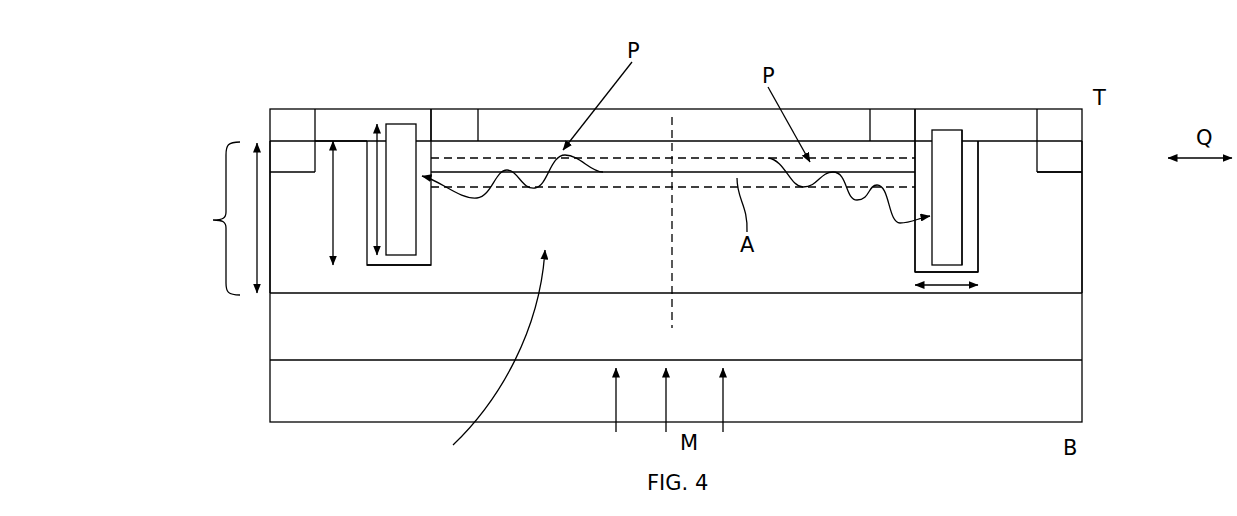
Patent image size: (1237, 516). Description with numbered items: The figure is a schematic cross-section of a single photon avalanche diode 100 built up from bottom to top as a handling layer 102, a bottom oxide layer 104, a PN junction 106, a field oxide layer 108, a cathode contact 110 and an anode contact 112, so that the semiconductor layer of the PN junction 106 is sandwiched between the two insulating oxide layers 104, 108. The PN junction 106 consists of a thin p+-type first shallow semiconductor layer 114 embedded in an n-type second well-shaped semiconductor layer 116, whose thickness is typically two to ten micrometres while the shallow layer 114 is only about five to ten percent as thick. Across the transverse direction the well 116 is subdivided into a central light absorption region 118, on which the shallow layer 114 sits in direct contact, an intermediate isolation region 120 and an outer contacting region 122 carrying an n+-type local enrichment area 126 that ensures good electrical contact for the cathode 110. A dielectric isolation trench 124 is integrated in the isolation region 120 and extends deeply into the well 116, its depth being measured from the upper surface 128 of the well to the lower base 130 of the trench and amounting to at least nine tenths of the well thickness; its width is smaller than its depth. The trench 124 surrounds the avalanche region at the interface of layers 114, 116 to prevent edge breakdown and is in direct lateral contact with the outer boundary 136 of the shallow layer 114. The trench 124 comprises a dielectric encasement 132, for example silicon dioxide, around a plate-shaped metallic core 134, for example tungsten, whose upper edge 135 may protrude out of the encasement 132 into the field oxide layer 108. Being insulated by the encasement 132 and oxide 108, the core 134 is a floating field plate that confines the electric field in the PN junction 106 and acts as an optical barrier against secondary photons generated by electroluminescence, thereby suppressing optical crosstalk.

The single photon avalanche diode 100 is at (1162, 48).
The handling layer 102 is at (277, 391).
The bottom oxide layer 104 is at (277, 328).
The PN junction 106 is at (213, 220).
The field oxide layer 108 is at (517, 132).
The cathode contact 110 is at (290, 133).
The anode contact 112 is at (453, 120).
The first shallow extrinsic semiconductor layer 114 is at (703, 155).
The second well-shaped extrinsic semiconductor layer 116 is at (827, 244).
The central light absorption region 118 is at (487, 365).
The intermediate isolation region 120 is at (420, 290).
The outer contacting region 122 is at (318, 275).
The dielectric isolation trench 124 is at (979, 233).
The local enrichment area 126 is at (1062, 157).
The upper surface 128 is at (343, 141).
The lower base 130 is at (428, 258).
The encasement 132 is at (968, 263).
The metallic core 134 is at (963, 193).
The upper edge 135 is at (401, 130).
The outer boundary 136 is at (910, 138).